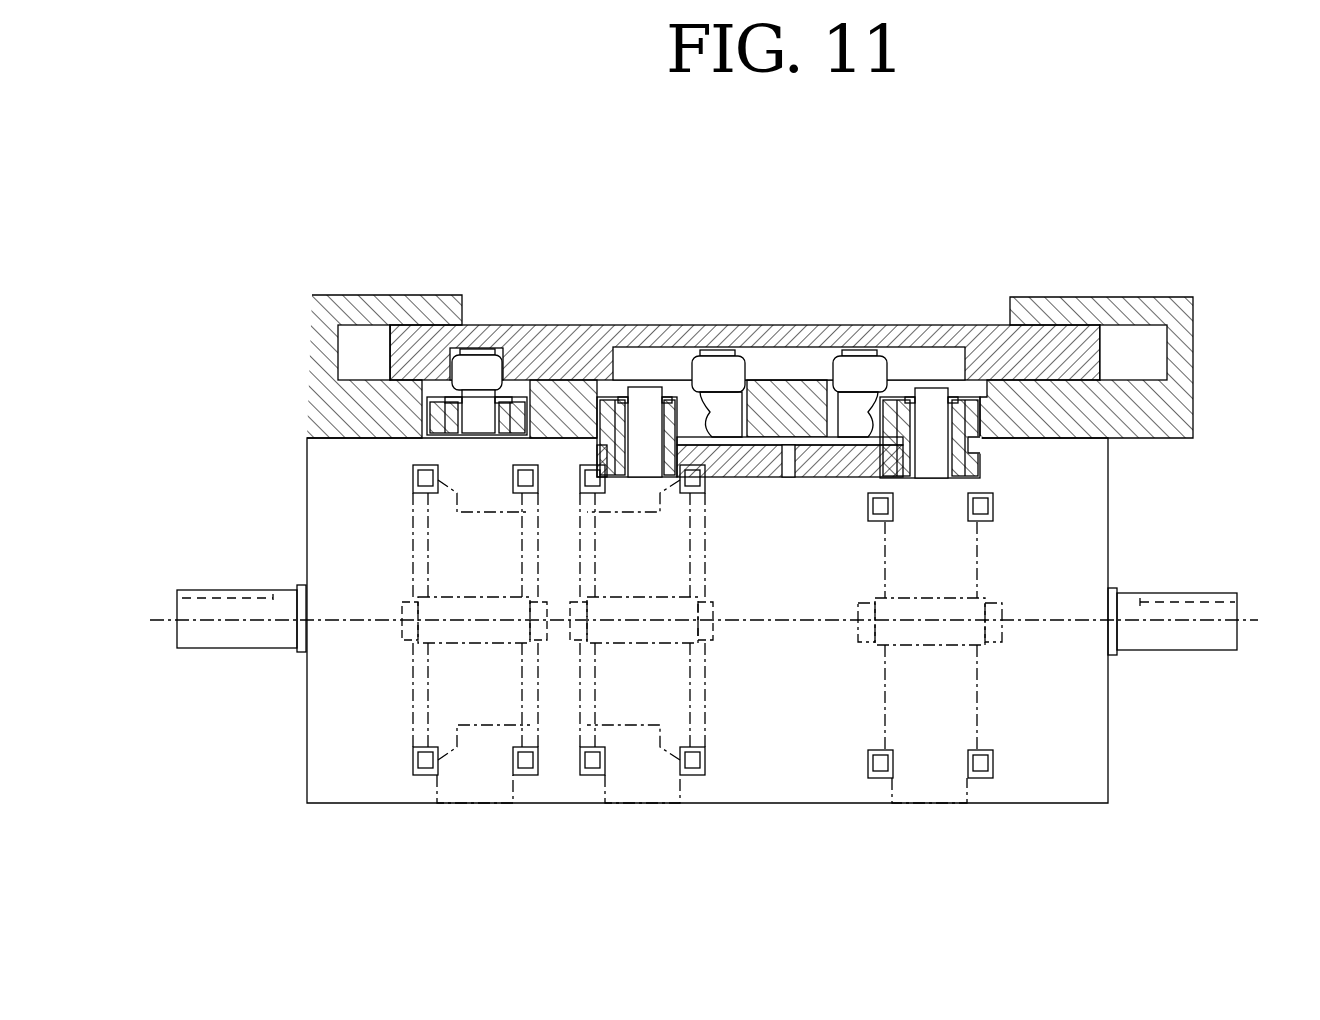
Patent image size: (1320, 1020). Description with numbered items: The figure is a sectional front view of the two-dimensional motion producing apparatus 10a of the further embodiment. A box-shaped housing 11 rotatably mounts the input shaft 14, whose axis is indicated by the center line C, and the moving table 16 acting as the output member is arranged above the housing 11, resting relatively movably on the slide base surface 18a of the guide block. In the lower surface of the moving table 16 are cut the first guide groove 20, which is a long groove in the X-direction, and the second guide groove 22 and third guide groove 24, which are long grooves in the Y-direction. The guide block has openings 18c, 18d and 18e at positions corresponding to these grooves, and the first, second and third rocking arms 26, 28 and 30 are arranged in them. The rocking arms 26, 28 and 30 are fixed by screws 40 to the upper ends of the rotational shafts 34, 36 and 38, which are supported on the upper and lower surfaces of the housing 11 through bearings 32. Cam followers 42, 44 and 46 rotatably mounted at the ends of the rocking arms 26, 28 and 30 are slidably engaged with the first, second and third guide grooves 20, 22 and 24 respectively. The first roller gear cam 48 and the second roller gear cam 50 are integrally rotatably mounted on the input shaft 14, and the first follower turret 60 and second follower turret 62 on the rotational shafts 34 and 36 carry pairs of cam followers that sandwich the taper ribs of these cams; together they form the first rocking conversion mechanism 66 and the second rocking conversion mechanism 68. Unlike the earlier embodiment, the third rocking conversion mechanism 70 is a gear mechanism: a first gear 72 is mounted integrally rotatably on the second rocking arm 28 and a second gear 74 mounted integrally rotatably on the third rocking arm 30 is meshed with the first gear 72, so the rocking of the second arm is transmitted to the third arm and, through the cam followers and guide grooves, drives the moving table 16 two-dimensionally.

The two-dimensional motion producing apparatus 10a is at (1207, 232).
The housing 11 is at (1090, 712).
The input shaft 14 is at (213, 607).
The moving table 16 is at (1078, 297).
The slide base surface 18a is at (1157, 377).
The opening 18c is at (430, 398).
The opening 18d is at (753, 477).
The opening 18e is at (998, 443).
The first guide groove 20 is at (490, 350).
The second guide groove 22 is at (668, 350).
The third guide groove 24 is at (940, 357).
The first rocking arm 26 is at (425, 415).
The second rocking arm 28 is at (712, 380).
The third rocking arm 30 is at (862, 370).
The bearings 32 is at (415, 482).
The rotational shaft 34 is at (495, 795).
The rotational shaft 36 is at (660, 795).
The rotational shaft 38 is at (950, 795).
The screws 40 is at (507, 400).
The cam follower 42 is at (435, 360).
The cam follower 44 is at (745, 405).
The cam follower 46 is at (858, 415).
The first roller gear cam 48 is at (412, 685).
The second roller gear cam 50 is at (708, 707).
The first follower turret 60 is at (428, 632).
The second follower turret 62 is at (665, 650).
The first rocking conversion mechanism 66 is at (378, 598).
The second rocking conversion mechanism 68 is at (735, 604).
The third rocking conversion mechanism 70 is at (795, 490).
The first gear 72 is at (768, 455).
The second gear 74 is at (822, 440).
The center axis C is at (823, 623).